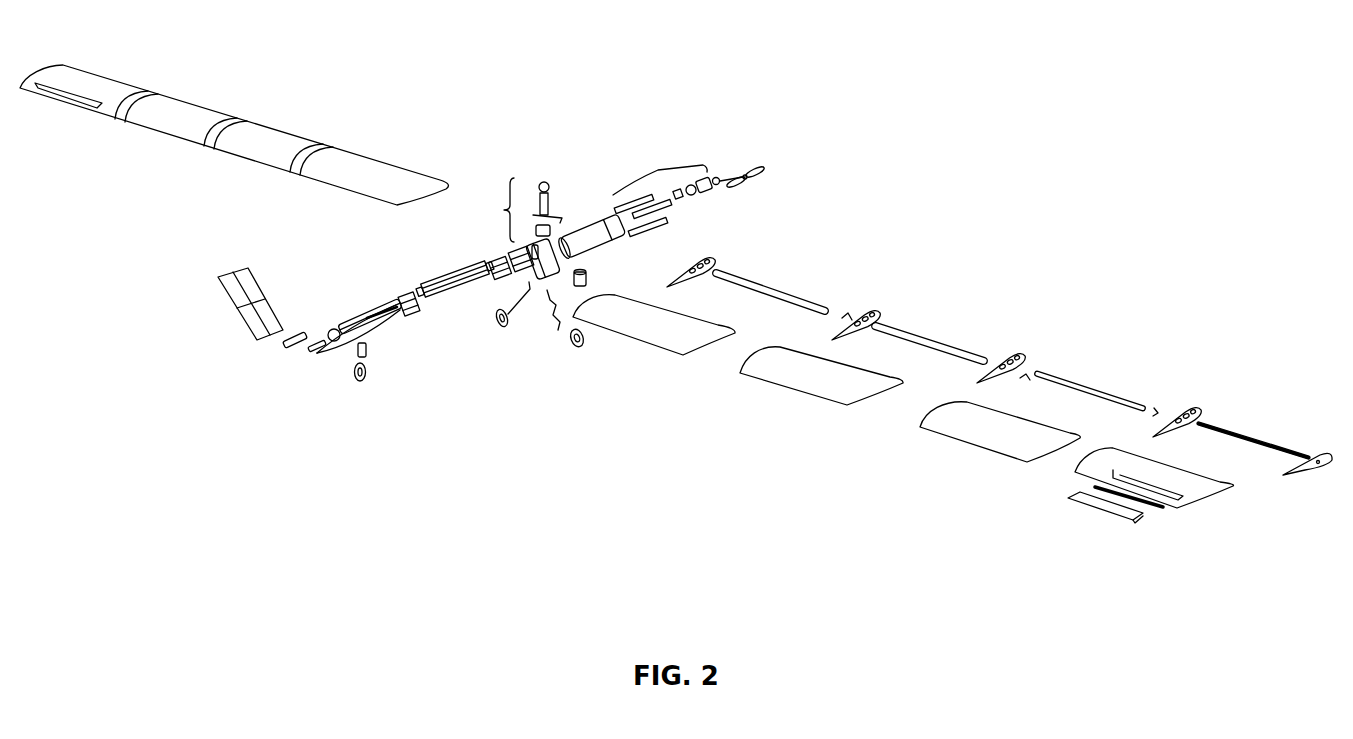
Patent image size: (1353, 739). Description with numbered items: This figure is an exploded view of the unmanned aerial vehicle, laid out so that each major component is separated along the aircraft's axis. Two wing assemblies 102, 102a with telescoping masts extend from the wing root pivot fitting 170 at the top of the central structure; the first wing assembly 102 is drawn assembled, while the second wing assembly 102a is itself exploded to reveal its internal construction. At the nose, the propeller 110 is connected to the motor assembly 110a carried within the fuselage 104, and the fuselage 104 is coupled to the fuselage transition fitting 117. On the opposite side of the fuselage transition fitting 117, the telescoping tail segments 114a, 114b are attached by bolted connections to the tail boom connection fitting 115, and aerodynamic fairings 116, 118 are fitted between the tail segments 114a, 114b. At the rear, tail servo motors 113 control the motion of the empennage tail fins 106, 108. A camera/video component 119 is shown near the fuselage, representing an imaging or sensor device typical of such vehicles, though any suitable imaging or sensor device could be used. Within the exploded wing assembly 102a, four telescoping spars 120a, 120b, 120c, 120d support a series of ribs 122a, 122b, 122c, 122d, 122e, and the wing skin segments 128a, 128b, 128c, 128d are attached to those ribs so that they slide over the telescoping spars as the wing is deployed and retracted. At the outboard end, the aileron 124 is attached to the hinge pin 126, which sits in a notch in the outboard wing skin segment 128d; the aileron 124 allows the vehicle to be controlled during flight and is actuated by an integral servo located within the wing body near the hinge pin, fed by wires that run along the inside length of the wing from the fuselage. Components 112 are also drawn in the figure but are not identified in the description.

The wing assembly 102 is at (285, 138).
The wing assembly 102a is at (1099, 216).
The fuselage 104 is at (597, 213).
The empennage tail fin 106 is at (333, 355).
The empennage tail fin 108 is at (220, 285).
The propeller 110 is at (743, 172).
The motor assembly 110a is at (660, 168).
The bearing disc 112 is at (361, 383).
The tail servo motor 113 is at (307, 350).
The telescoping tail segment 114a is at (447, 302).
The telescoping tail segment 114b is at (357, 315).
The tail boom connection fitting 115 is at (520, 250).
The aerodynamic fairing 116 is at (495, 323).
The fuselage transition fitting 117 is at (540, 278).
The aerodynamic fairing 118 is at (412, 310).
The camera/video component 119 is at (587, 272).
The telescoping spar 120a is at (782, 290).
The telescoping spar 120b is at (938, 337).
The telescoping spar 120c is at (1085, 383).
The telescoping spar 120d is at (1240, 430).
The rib 122a is at (710, 263).
The rib 122b is at (878, 312).
The rib 122c is at (1015, 357).
The rib 122d is at (1183, 415).
The rib 122e is at (1315, 453).
The aileron 124 is at (1088, 502).
The hinge pin 126 is at (1155, 508).
The wing skin segment 128a is at (643, 318).
The wing skin segment 128b is at (820, 380).
The wing skin segment 128c is at (987, 432).
The outboard wing skin segment 128d is at (1180, 478).
The wing root pivot fitting 170 is at (506, 210).